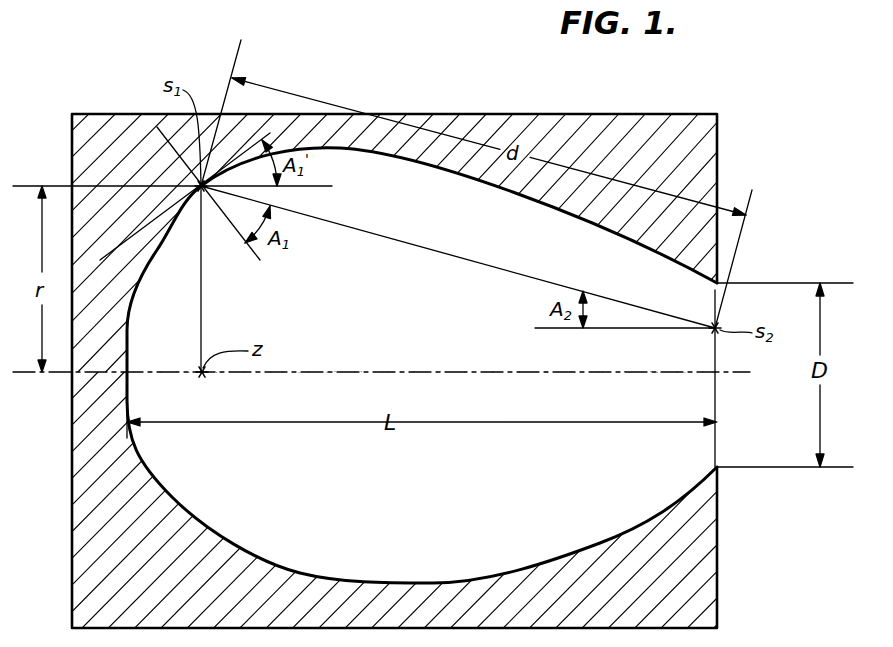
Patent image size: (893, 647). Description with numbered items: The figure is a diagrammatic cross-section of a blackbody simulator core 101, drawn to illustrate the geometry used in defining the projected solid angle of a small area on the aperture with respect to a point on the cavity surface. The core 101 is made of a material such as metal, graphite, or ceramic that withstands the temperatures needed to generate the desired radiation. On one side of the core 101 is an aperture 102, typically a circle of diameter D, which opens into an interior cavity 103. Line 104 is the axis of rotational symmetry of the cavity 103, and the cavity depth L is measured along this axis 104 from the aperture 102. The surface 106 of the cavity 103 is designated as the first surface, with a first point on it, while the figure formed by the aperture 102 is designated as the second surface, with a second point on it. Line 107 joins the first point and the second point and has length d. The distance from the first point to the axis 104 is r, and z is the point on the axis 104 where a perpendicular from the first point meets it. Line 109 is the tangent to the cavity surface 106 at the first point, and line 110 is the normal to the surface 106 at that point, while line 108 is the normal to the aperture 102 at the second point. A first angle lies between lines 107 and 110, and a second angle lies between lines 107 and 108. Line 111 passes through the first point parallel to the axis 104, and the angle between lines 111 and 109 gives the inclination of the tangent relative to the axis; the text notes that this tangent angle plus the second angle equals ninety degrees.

The blackbody simulator core 101 is at (717, 578).
The aperture 102 is at (716, 400).
The interior cavity 103 is at (459, 315).
The axis of rotational symmetry 104 is at (435, 372).
The cavity surface 106 is at (230, 547).
The line between s1 and s2 107 is at (472, 261).
The normal to the aperture at s2 108 is at (642, 329).
The tangent to the cavity surface at s1 109 is at (140, 231).
The normal to the cavity surface at s1 110 is at (147, 143).
The line parallel to the axis of symmetry through s1 111 is at (110, 187).